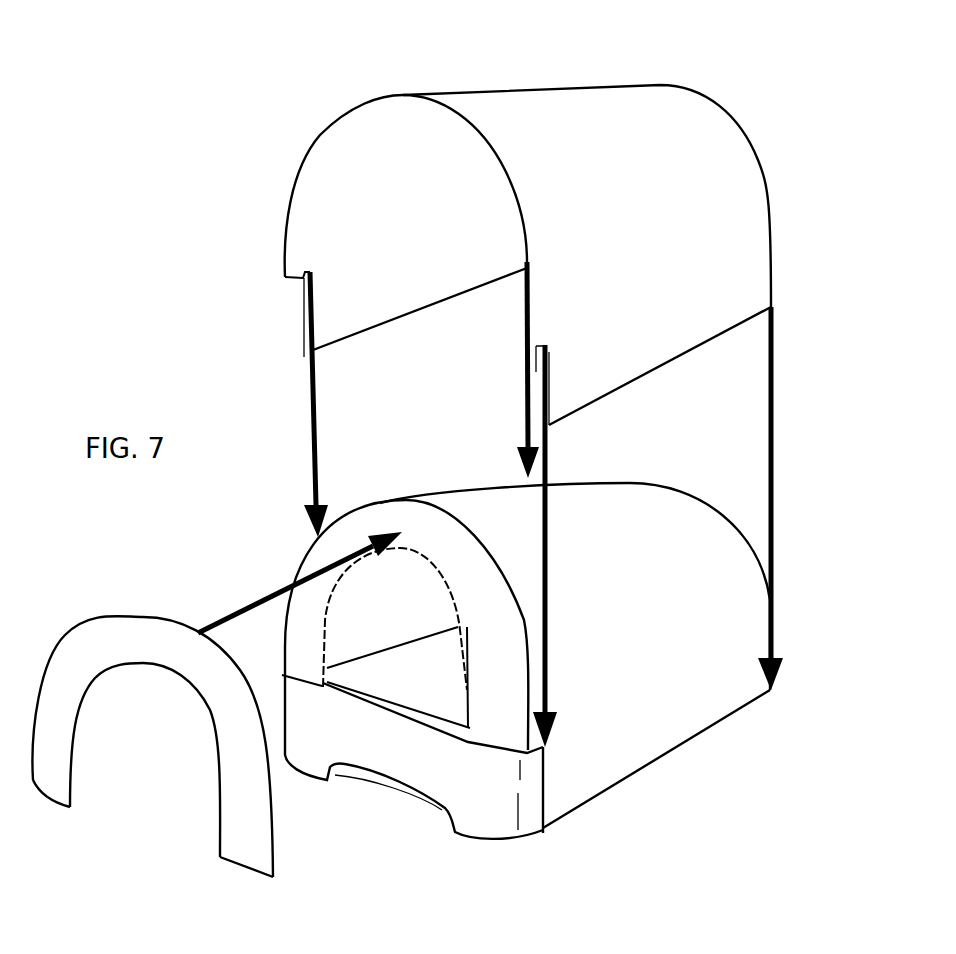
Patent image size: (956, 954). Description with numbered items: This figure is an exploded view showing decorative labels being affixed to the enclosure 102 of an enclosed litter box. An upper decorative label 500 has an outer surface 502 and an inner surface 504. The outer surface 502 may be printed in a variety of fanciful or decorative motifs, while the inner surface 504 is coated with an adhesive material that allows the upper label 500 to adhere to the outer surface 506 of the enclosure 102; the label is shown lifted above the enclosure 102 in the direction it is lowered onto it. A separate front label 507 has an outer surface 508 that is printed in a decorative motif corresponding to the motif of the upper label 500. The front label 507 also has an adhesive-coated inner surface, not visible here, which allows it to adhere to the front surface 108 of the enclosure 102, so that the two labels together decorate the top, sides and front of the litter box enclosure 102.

The upper decorative label 500 is at (764, 103).
The outer surface 502 is at (663, 193).
The inner surface 504 is at (420, 230).
The outer surface 506 is at (673, 550).
The enclosure 102 is at (626, 478).
The front surface 108 is at (448, 551).
The front label 507 is at (122, 611).
The outer surface 508 is at (150, 660).